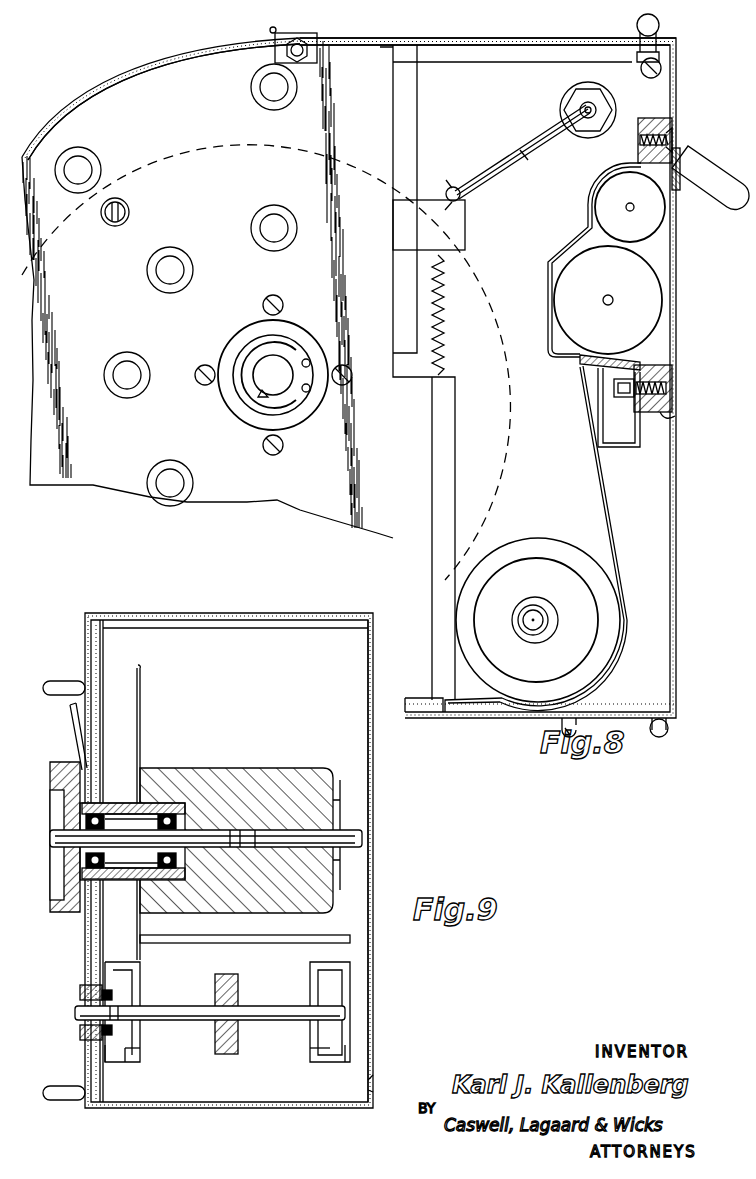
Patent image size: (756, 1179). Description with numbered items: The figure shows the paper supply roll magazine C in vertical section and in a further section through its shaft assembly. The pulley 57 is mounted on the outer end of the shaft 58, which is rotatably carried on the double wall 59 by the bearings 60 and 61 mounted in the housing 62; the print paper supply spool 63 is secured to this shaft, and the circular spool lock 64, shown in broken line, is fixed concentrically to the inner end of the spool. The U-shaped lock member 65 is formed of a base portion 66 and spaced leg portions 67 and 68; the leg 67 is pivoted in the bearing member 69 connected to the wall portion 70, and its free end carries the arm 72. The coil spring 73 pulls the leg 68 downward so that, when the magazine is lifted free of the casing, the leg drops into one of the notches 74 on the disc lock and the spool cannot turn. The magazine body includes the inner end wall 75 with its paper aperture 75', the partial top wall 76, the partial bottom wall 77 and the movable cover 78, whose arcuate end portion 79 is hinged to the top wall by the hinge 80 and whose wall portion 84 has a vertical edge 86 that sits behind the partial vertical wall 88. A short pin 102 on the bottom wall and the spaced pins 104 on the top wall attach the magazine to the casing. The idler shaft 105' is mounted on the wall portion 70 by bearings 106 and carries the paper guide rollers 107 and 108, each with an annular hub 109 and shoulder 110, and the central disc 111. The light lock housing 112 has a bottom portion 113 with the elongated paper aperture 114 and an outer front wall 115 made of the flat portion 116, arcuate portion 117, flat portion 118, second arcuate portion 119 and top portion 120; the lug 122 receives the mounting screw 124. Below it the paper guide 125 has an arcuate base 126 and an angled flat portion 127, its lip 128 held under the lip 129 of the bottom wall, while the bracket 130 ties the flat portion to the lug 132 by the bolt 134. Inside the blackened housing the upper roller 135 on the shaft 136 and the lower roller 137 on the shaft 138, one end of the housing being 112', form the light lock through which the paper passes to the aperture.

In FIG. 9, the pulley 57 is at (56, 910).
In FIG. 8, the shaft 58 is at (276, 373).
In FIG. 9, the shaft 58 is at (58, 840).
In FIG. 8, the double wall portion 59 is at (256, 284).
In FIG. 9, the double wall portion 59 is at (106, 704).
In FIG. 9, the bearing 60 is at (116, 806).
In FIG. 9, the bearing 61 is at (176, 802).
In FIG. 8, the housing 62 is at (292, 330).
In FIG. 9, the housing 62 is at (150, 802).
In FIG. 9, the print paper supply spool 63 is at (276, 782).
In FIG. 8, the circular spool lock 64 is at (226, 120).
In FIG. 8, the U-shaped lock member 65 is at (507, 152).
In FIG. 8, the base portion 66 is at (536, 156).
In FIG. 8, the leg portion 67 is at (582, 114).
In FIG. 8, the leg portion 68 is at (457, 188).
In FIG. 8, the bearing member 69 is at (584, 91).
In FIG. 8, the wall portion 70 is at (567, 189).
In FIG. 8, the arm 72 is at (713, 180).
In FIG. 8, the coil spring 73 is at (445, 334).
In FIG. 8, the notches 74 is at (102, 205).
In FIG. 8, the inner end wall 75 is at (505, 378).
In FIG. 9, the inner end wall 75 is at (229, 877).
In FIG. 8, the paper aperture 75' is at (694, 283).
In FIG. 8, the partial top wall 76 is at (522, 40).
In FIG. 8, the partial bottom wall 77 is at (627, 722).
In FIG. 9, the partial bottom wall 77 is at (245, 1007).
In FIG. 8, the movable cover member 78 is at (62, 118).
In FIG. 9, the movable cover member 78 is at (334, 618).
In FIG. 8, the arcuate end portion 79 is at (48, 140).
In FIG. 9, the arcuate end portion 79 is at (148, 603).
In FIG. 8, the hinge 80 is at (272, 28).
In FIG. 9, the wall portion 84 is at (383, 803).
In FIG. 9, the vertical edge 86 is at (373, 1094).
In FIG. 9, the partial vertical wall 88 is at (373, 1081).
In FIG. 8, the short pin 102 is at (669, 729).
In FIG. 8, the spaced pins 104 is at (660, 28).
In FIG. 8, the idler shaft 105' is at (545, 613).
In FIG. 9, the idler shaft 105' is at (210, 1030).
In FIG. 9, the bearings 106 is at (118, 986).
In FIG. 9, the paper guide roller 107 is at (129, 1066).
In FIG. 8, the paper guide roller 108 is at (560, 562).
In FIG. 9, the paper guide roller 108 is at (326, 1066).
In FIG. 9, the annular paper supporting hub 109 is at (141, 963).
In FIG. 9, the annular shoulder 110 is at (111, 1065).
In FIG. 9, the disc 111 is at (240, 1002).
In FIG. 8, the light lock housing 112 is at (578, 260).
In FIG. 8, the housing end 112' is at (690, 262).
In FIG. 8, the bottom portion 113 is at (626, 362).
In FIG. 8, the elongated paper aperture 114 is at (570, 360).
In FIG. 8, the outer front wall 115 is at (541, 282).
In FIG. 8, the upright flat portion 116 is at (548, 326).
In FIG. 8, the arcuate portion 117 is at (566, 246).
In FIG. 8, the flat upright portion 118 is at (587, 211).
In FIG. 8, the second arcuate portion 119 is at (606, 172).
In FIG. 8, the horizontal top portion 120 is at (634, 170).
In FIG. 8, the lug 122 is at (656, 118).
In FIG. 8, the mounting screw 124 is at (674, 141).
In FIG. 8, the paper guide 125 is at (618, 539).
In FIG. 8, the arcuate base portion 126 is at (602, 686).
In FIG. 8, the flat portion 127 is at (598, 513).
In FIG. 8, the lip portion 128 is at (441, 715).
In FIG. 8, the lip 129 is at (425, 697).
In FIG. 8, the bracket 130 is at (640, 455).
In FIG. 8, the lug 132 is at (670, 412).
In FIG. 8, the bolt 134 is at (681, 391).
In FIG. 8, the upper roller 135 is at (652, 224).
In FIG. 8, the shaft 136 is at (630, 203).
In FIG. 8, the lower roller 137 is at (608, 300).
In FIG. 8, the shaft 138 is at (610, 291).
In FIG. 8, the magazine C is at (85, 492).
In FIG. 9, the magazine C is at (385, 844).